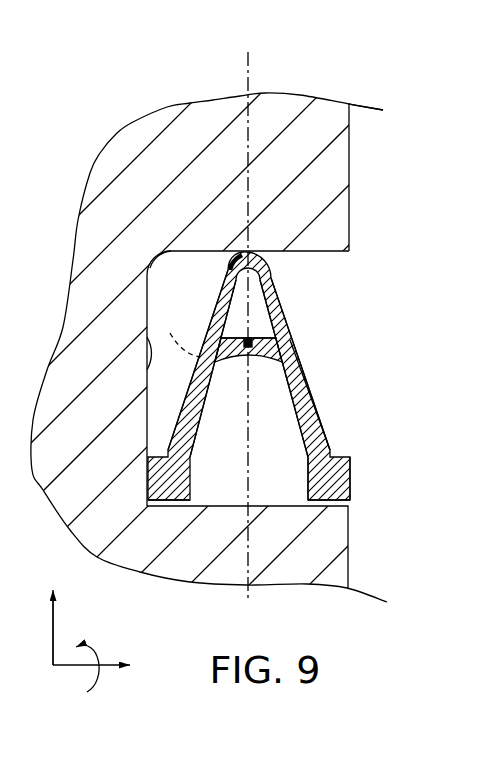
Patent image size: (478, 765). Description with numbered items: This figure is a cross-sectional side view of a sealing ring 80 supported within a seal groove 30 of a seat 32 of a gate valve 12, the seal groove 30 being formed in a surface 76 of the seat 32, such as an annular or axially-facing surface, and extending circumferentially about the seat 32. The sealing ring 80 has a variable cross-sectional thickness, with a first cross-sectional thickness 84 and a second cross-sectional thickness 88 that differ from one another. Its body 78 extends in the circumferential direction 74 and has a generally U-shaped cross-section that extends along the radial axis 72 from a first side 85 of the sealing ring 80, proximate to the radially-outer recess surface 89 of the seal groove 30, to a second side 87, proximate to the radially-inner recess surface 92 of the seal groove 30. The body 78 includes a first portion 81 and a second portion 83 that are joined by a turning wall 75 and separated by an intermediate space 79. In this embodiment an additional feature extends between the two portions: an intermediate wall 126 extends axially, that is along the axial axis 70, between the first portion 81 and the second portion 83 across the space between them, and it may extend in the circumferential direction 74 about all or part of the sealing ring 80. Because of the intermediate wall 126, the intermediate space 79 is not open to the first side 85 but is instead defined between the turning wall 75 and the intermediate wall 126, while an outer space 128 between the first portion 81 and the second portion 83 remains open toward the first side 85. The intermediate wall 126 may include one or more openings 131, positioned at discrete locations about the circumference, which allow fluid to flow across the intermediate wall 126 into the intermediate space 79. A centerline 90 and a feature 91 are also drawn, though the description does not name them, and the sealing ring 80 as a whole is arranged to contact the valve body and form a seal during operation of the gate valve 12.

The gate valve 12 is at (368, 92).
The seal groove 30 is at (239, 378).
The seat 32 is at (343, 115).
The axial axis 70 is at (86, 666).
The radial axis 72 is at (55, 632).
The circumferential direction 74 is at (95, 650).
The turning wall 75 is at (223, 268).
The surface 76 is at (349, 158).
The body 78 is at (285, 341).
The intermediate space 79 is at (238, 329).
The sealing ring 80 is at (334, 313).
The first portion 81 is at (213, 311).
The second portion 83 is at (301, 364).
The first cross-sectional thickness 84 is at (270, 467).
The first side 85 is at (178, 508).
The second side 87 is at (272, 240).
The second cross-sectional thickness 88 is at (323, 413).
The radially-outer recess surface 89 is at (200, 507).
The centerline 90 is at (247, 68).
The port 91 is at (148, 372).
The radially-inner recess surface 92 is at (172, 252).
The intermediate wall 126 is at (259, 358).
The outer space 128 is at (296, 422).
The openings 131 is at (175, 334).